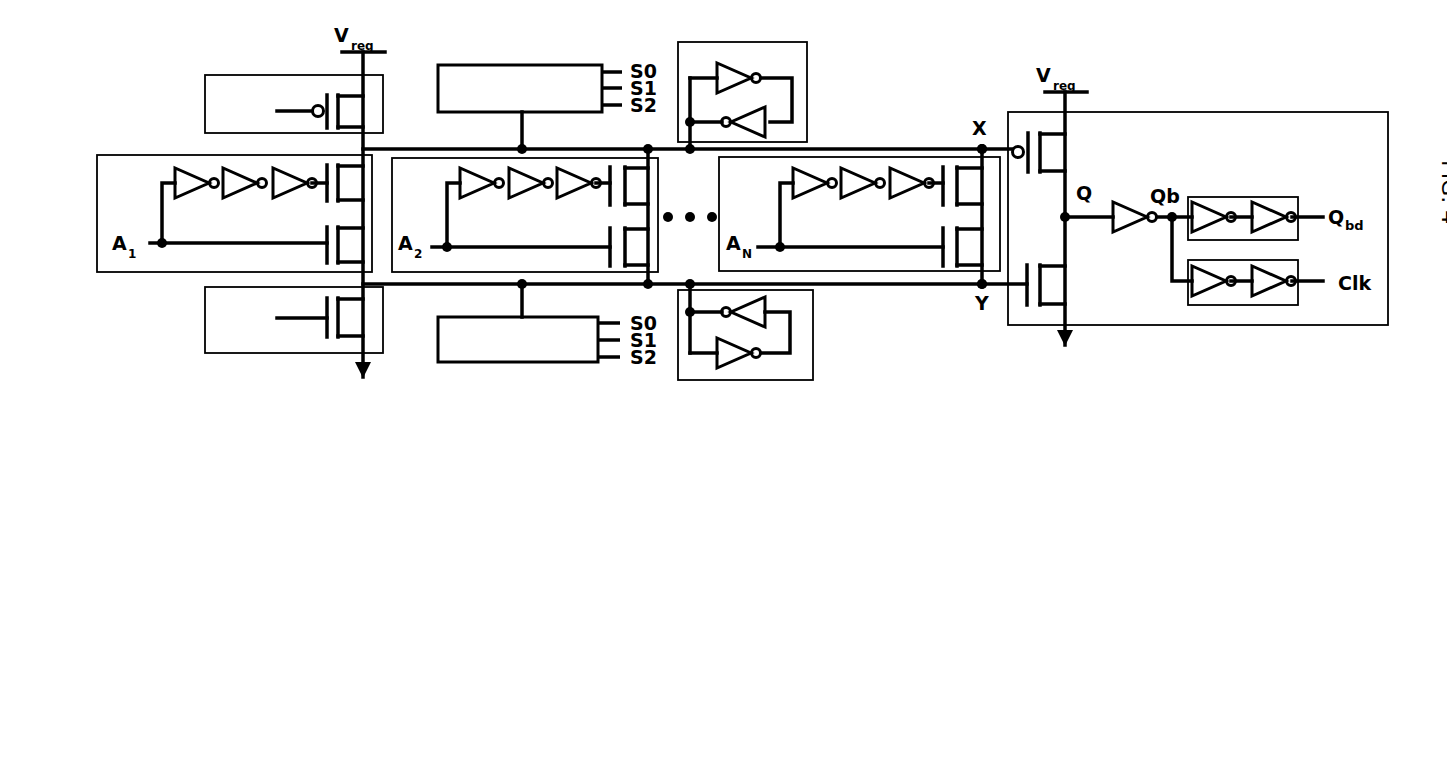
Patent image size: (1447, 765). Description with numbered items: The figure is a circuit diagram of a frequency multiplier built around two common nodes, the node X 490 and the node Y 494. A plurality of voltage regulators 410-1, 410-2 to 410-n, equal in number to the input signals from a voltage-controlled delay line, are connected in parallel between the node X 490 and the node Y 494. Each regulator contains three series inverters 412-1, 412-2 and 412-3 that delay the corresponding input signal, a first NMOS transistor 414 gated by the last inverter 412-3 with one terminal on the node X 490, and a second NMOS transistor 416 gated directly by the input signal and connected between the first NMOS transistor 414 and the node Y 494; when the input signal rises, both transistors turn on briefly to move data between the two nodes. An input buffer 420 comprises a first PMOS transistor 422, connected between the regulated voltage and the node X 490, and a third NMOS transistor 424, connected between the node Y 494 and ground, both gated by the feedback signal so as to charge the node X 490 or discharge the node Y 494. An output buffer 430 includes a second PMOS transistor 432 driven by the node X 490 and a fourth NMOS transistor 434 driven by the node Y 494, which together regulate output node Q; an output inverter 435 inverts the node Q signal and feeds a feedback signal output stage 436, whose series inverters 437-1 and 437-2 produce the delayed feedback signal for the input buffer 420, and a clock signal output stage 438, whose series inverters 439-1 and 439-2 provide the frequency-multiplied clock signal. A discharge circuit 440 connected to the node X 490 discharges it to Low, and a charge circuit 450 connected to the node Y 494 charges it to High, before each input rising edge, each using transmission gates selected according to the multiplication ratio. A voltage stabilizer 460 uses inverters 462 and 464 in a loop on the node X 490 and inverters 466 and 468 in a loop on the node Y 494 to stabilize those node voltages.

The voltage regulator 410-1 is at (267, 219).
The voltage regulator 410-2 is at (405, 274).
The voltage regulator 410-n is at (905, 276).
The inverter 412-1 is at (170, 165).
The inverter 412-2 is at (220, 198).
The inverter 412-3 is at (279, 198).
The first NMOS transistor 414 is at (345, 185).
The second NMOS transistor 416 is at (345, 241).
The input buffer 420 is at (318, 69).
The first PMOS transistor 422 is at (350, 110).
The third NMOS transistor 424 is at (312, 350).
The output buffer 430 is at (1185, 199).
The second PMOS transistor 432 is at (1050, 152).
The fourth NMOS transistor 434 is at (1050, 293).
The output inverter 435 is at (1132, 234).
The feedback signal output stage 436 is at (1267, 190).
The inverter 437-1 is at (1214, 201).
The inverter 437-2 is at (1268, 204).
The clock signal output stage 438 is at (1272, 312).
The inverter 439-1 is at (1206, 302).
The inverter 439-2 is at (1266, 302).
The discharge circuit 440 is at (503, 62).
The charge circuit 450 is at (510, 363).
The voltage stabilizer 460 is at (761, 200).
The inverter 462 is at (735, 65).
The inverter 464 is at (770, 136).
The inverter 466 is at (770, 300).
The inverter 468 is at (694, 358).
The node X 490 is at (982, 147).
The node Y 494 is at (982, 289).